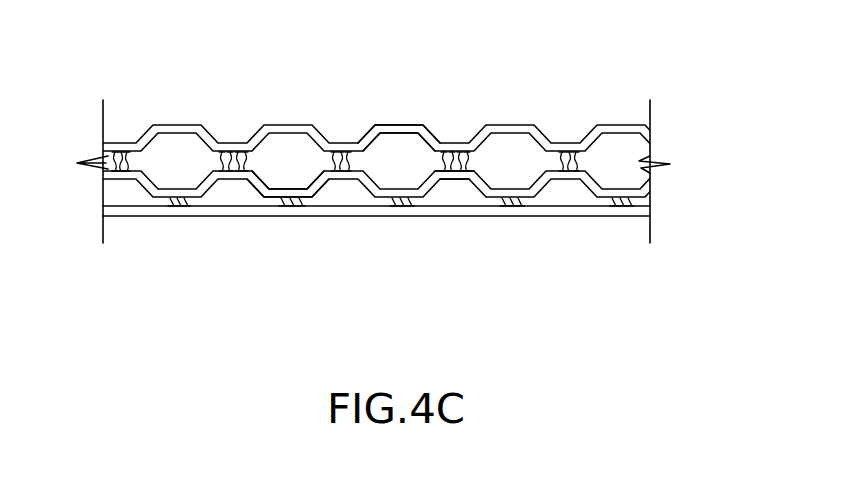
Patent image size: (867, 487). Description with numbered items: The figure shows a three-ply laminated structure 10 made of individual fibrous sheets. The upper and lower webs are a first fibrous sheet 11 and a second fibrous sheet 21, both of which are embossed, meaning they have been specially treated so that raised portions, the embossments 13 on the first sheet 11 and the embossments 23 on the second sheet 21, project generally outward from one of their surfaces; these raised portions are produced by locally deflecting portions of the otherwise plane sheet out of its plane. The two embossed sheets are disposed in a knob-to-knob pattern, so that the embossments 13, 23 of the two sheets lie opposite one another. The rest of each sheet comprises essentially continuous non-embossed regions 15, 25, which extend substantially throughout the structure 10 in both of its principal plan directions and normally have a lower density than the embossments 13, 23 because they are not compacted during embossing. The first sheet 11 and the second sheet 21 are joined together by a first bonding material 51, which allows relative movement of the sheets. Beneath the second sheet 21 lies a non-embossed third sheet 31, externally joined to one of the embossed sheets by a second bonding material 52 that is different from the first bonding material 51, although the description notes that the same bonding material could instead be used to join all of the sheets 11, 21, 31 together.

The structure 10 is at (114, 72).
The first fibrous sheet 11 is at (344, 90).
The embossments 13 is at (450, 143).
The non-embossed region 15 is at (405, 123).
The second fibrous sheet 21 is at (252, 188).
The embossments 23 is at (455, 182).
The non-embossed region 25 is at (310, 200).
The third sheet 31 is at (347, 282).
The first bonding material 51 is at (600, 152).
The second bonding material 52 is at (602, 198).